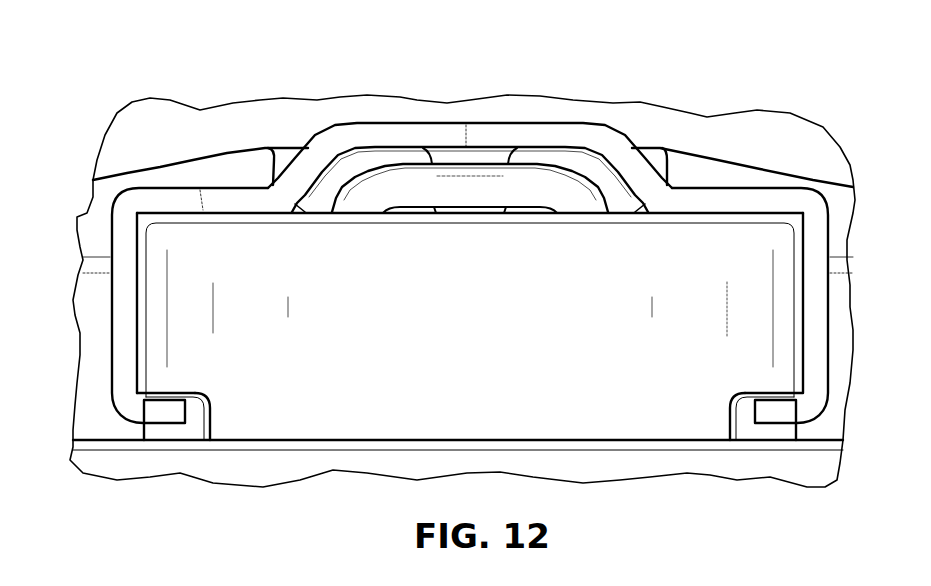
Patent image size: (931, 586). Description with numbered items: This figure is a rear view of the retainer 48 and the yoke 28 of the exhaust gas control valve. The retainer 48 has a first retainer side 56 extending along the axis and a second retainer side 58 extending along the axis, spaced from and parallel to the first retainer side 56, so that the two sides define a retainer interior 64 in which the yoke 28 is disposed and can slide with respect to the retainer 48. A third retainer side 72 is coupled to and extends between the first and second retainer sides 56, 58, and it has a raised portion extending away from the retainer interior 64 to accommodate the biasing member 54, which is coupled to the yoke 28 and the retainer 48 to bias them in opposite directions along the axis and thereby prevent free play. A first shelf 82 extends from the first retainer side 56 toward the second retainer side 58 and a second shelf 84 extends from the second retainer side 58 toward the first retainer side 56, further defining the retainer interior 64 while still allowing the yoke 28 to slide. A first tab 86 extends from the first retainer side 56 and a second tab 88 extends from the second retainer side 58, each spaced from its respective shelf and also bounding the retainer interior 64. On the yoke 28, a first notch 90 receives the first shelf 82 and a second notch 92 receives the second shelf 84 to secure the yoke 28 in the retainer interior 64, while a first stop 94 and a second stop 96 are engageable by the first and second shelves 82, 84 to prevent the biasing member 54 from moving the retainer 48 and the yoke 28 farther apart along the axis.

The yoke 28 is at (233, 390).
The retainer 48 is at (123, 323).
The biasing member 54 is at (485, 185).
The first retainer side 56 is at (820, 313).
The second retainer side 58 is at (123, 283).
The retainer interior 64 is at (146, 404).
The third retainer side 72 is at (563, 137).
The first shelf 82 is at (780, 420).
The second shelf 84 is at (160, 415).
The first tab 86 is at (741, 200).
The second tab 88 is at (190, 197).
The first notch 90 is at (735, 423).
The second notch 92 is at (203, 423).
The first stop 94 is at (750, 433).
The second stop 96 is at (190, 432).